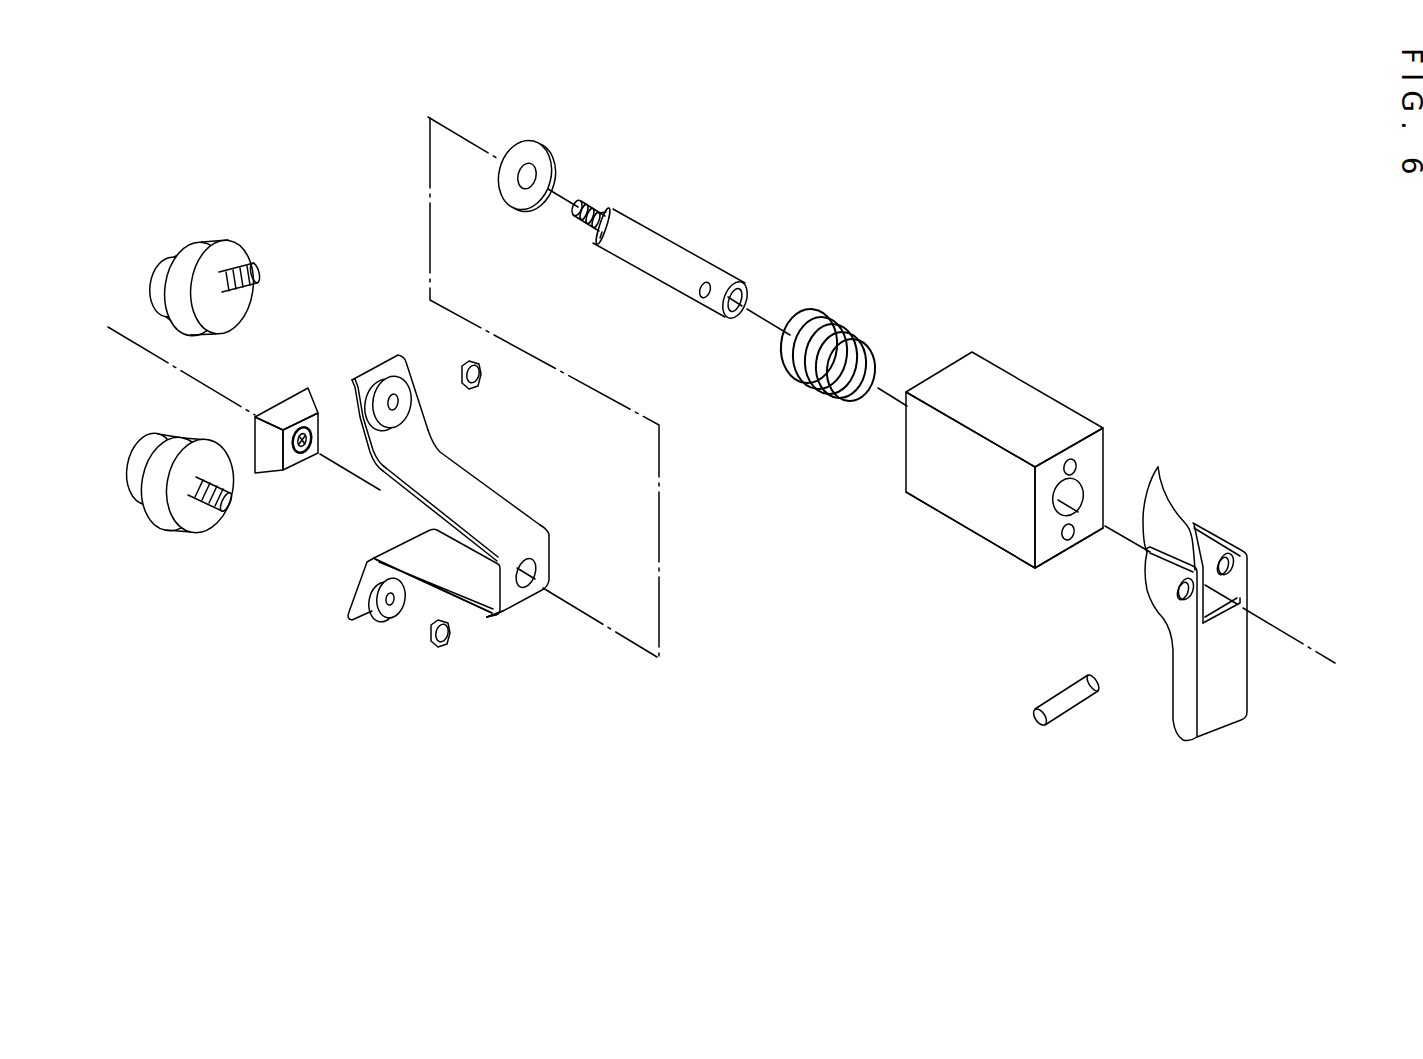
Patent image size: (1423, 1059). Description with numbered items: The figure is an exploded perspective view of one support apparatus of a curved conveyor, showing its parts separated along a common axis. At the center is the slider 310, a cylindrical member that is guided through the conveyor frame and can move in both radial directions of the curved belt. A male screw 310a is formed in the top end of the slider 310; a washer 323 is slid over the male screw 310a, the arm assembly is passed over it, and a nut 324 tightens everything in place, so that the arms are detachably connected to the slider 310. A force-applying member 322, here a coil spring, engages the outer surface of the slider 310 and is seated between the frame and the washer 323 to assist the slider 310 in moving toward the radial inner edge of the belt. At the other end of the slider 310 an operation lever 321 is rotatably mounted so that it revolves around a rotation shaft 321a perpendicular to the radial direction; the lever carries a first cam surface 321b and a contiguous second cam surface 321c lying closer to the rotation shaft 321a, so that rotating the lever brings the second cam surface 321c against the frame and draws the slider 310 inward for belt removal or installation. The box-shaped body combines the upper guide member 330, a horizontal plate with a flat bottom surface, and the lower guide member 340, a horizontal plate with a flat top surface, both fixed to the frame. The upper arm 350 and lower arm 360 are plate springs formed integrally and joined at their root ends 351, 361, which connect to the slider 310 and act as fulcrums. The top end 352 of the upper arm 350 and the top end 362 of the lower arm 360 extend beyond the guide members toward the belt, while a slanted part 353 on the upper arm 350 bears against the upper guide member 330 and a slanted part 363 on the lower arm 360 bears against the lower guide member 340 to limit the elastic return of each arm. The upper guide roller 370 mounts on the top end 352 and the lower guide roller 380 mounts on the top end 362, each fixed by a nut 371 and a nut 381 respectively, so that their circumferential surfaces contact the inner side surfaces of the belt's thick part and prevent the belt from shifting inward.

The slider 310 is at (670, 253).
The male screw 310a is at (597, 193).
The operation lever 321 is at (1249, 587).
The rotation shaft 321a is at (1067, 702).
The first cam surface 321b is at (1165, 502).
The second cam surface 321c is at (1240, 550).
The force-applying member 322 is at (842, 319).
The washer 323 is at (547, 142).
The nut 324 is at (283, 400).
The upper guide member 330 is at (1007, 395).
The lower guide member 340 is at (975, 535).
The upper arm 350 is at (477, 521).
The root end 351 is at (528, 542).
The top end 352 is at (378, 355).
The slanted part 353 is at (492, 500).
The lower arm 360 is at (424, 588).
The root end 361 is at (515, 602).
The top end 362 is at (358, 615).
The slanted part 363 is at (470, 612).
The upper guide roller 370 is at (233, 247).
The nut 371 is at (465, 388).
The lower guide roller 380 is at (187, 537).
The nut 381 is at (434, 645).